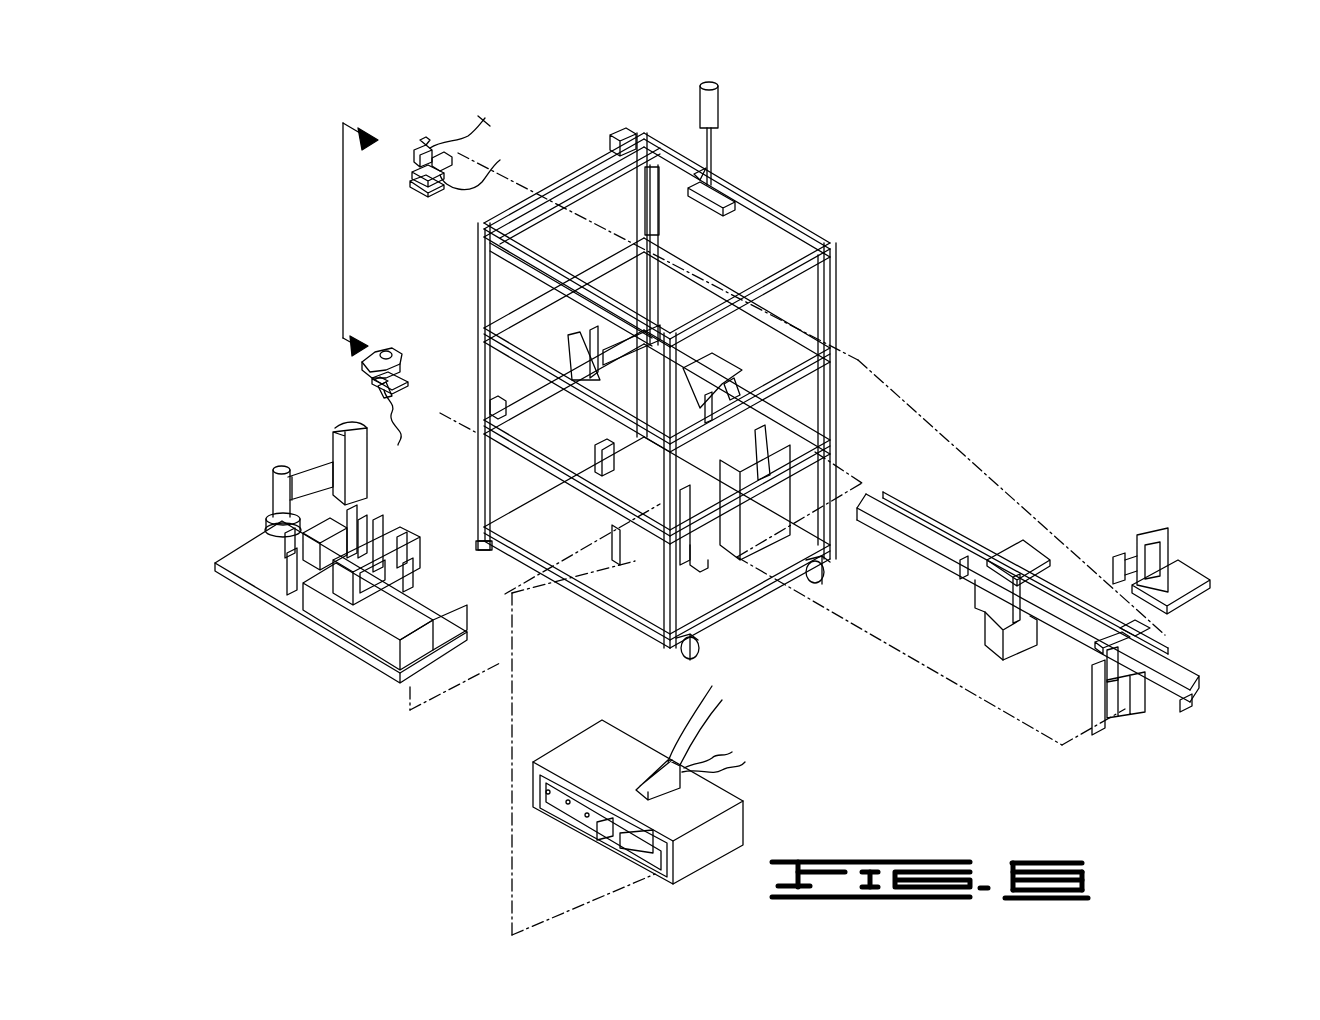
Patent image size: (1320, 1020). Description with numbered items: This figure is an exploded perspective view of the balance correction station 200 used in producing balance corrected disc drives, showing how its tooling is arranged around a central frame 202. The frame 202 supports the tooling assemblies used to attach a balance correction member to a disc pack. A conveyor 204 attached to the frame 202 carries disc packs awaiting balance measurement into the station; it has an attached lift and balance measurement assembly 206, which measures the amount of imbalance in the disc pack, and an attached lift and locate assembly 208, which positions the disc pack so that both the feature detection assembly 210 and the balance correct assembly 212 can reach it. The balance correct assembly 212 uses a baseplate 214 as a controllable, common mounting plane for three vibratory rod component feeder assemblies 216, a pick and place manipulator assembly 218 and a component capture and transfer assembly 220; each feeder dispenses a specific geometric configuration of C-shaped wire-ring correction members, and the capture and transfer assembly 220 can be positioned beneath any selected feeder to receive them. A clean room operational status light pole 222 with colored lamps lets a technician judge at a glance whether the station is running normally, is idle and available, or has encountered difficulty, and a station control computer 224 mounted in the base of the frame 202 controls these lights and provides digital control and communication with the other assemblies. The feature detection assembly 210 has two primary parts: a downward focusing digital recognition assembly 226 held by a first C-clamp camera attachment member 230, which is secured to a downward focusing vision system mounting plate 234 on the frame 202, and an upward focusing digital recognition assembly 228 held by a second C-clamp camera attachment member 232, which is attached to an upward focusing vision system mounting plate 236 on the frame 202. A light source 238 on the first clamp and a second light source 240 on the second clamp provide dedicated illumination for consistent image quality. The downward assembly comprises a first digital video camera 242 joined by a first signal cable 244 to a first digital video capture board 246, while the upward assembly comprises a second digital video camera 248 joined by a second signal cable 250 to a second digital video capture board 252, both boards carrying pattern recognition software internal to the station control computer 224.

The balance correction station 200 is at (858, 116).
The frame 202 is at (645, 128).
The conveyor 204 is at (878, 510).
The lift and balance measurement assembly 206 is at (1200, 610).
The lift and locate assembly 208 is at (975, 632).
The feature detection assembly 210 is at (343, 217).
The balance correct assembly 212 is at (252, 500).
The baseplate 214 is at (335, 636).
The vibratory rod component feeder assemblies 216 is at (365, 508).
The pick and place manipulator assembly 218 is at (270, 466).
The component capture and transfer assembly 220 is at (456, 610).
The operational status light pole 222 is at (720, 111).
The station control computer 224 is at (762, 827).
The downward focusing digital recognition assembly 226 is at (428, 133).
The upward focusing digital recognition assembly 228 is at (360, 390).
The first C-clamp camera attachment member 230 is at (441, 185).
The second C-clamp camera attachment member 232 is at (398, 368).
The downward focusing vision system mounting plate 234 is at (738, 194).
The upward focusing vision system mounting plate 236 is at (485, 550).
The light source 238 is at (426, 180).
The second light source 240 is at (377, 352).
The first digital video camera 242 is at (418, 148).
The first signal cable 244 is at (452, 180).
The first digital video capture board 246 is at (660, 745).
The second digital video camera 248 is at (373, 378).
The second signal cable 250 is at (392, 400).
The second digital video capture board 252 is at (690, 760).